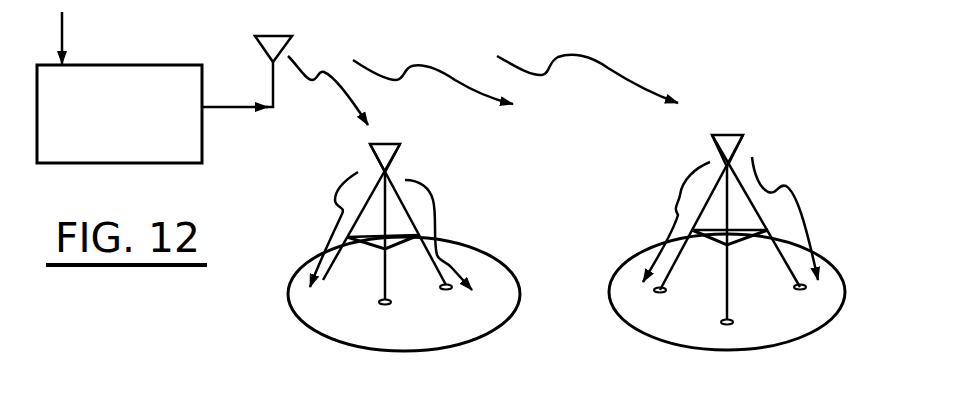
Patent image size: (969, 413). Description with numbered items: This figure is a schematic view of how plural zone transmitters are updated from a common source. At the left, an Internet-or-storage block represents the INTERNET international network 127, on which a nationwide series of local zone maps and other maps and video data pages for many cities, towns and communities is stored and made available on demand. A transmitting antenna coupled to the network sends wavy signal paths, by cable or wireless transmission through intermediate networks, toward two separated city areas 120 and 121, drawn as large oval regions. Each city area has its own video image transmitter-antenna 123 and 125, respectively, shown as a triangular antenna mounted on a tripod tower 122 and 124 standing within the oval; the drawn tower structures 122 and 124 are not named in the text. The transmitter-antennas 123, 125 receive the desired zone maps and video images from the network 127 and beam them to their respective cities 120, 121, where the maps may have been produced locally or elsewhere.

The INTERNET international network 127 is at (125, 66).
The city area 120 is at (327, 312).
The city area 121 is at (778, 316).
The first tripod tower 122 is at (413, 220).
The video image transmitter-antenna 123 is at (395, 153).
The second tripod tower 124 is at (793, 247).
The video image transmitter-antenna 125 is at (743, 135).